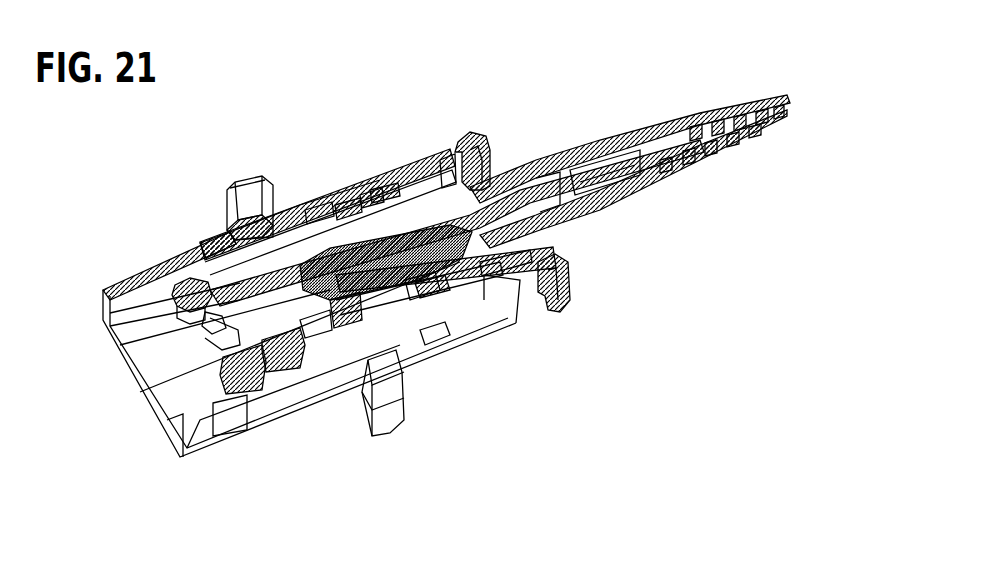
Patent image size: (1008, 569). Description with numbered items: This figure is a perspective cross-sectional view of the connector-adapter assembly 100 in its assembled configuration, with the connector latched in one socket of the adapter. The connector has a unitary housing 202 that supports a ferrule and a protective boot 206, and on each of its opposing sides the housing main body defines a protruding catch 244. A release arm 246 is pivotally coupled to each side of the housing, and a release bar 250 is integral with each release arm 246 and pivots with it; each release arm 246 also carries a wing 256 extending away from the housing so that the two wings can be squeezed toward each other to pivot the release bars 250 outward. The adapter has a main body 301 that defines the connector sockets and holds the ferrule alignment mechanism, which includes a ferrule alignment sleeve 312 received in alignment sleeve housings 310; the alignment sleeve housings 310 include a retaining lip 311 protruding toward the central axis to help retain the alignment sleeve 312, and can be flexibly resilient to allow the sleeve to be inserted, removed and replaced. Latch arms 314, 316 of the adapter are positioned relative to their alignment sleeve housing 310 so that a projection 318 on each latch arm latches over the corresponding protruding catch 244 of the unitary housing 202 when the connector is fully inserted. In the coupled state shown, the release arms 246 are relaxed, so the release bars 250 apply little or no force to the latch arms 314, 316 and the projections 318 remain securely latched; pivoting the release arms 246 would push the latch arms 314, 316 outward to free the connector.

The connector-adapter assembly 100 is at (396, 82).
The unitary housing 202 is at (508, 180).
The protective boot 206 is at (646, 130).
The protruding catch 244 is at (379, 187).
The release arm 246 is at (453, 173).
The release bar 250 is at (354, 198).
The wing 256 is at (481, 147).
The main body 301 is at (330, 200).
The alignment sleeve housing 310 is at (250, 335).
The retaining lip 311 is at (215, 318).
The ferrule alignment sleeve 312 is at (273, 190).
The latch arm 314 is at (346, 190).
The latch arm 316 is at (230, 272).
The projection 318 is at (187, 287).